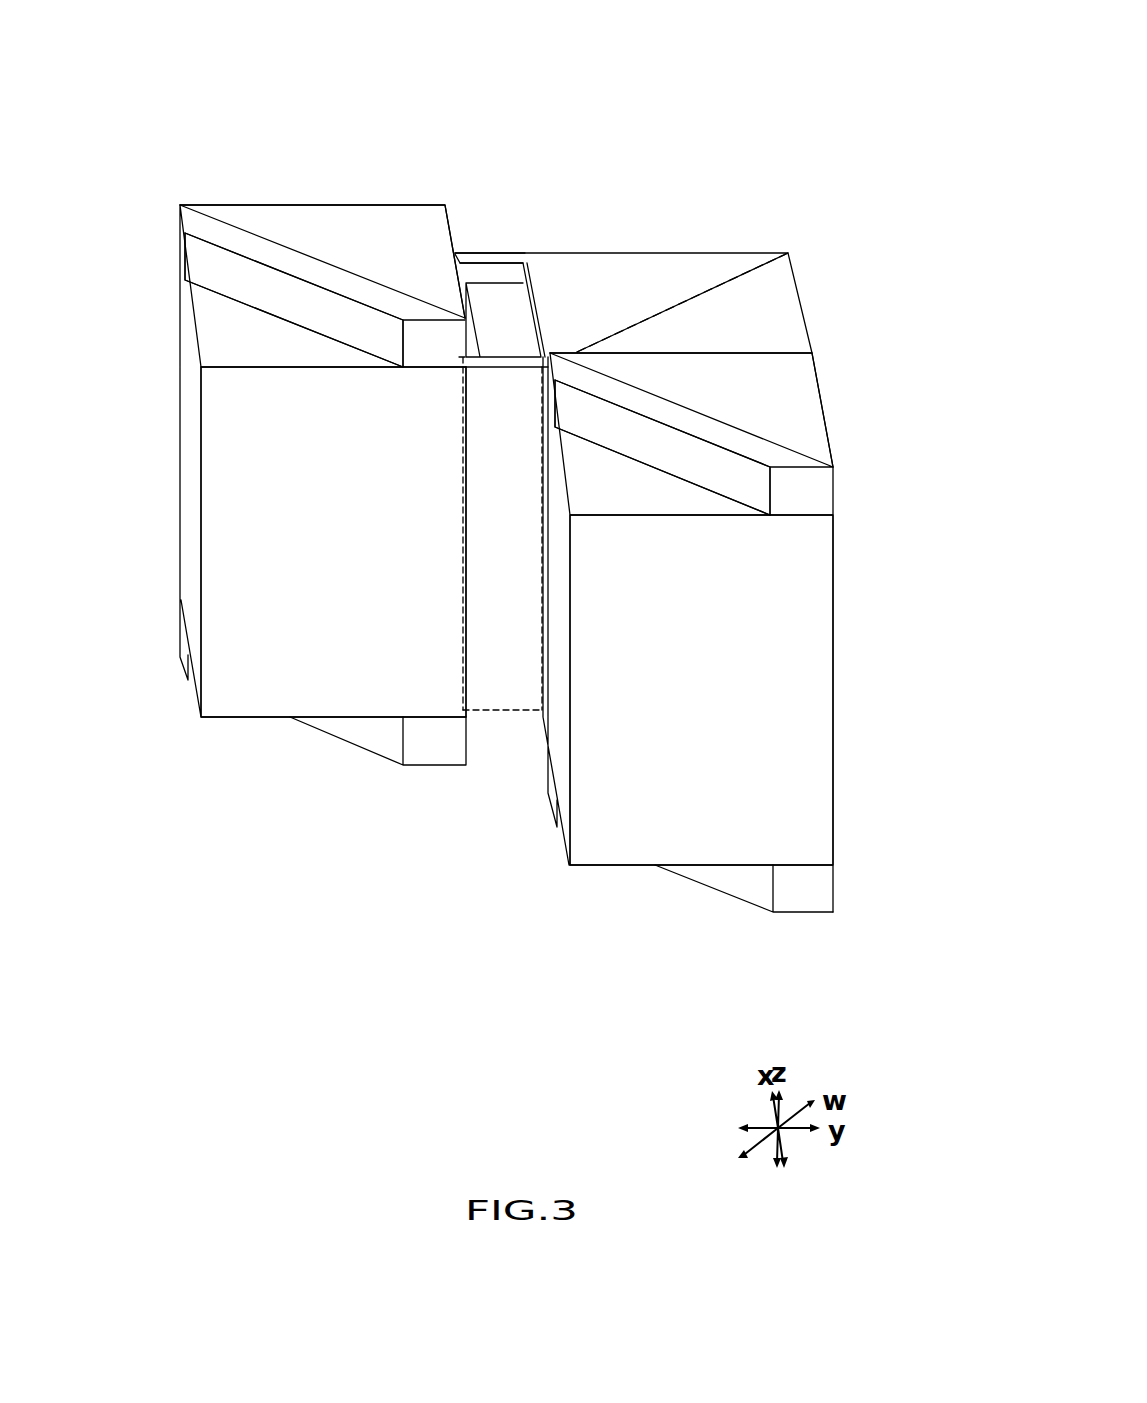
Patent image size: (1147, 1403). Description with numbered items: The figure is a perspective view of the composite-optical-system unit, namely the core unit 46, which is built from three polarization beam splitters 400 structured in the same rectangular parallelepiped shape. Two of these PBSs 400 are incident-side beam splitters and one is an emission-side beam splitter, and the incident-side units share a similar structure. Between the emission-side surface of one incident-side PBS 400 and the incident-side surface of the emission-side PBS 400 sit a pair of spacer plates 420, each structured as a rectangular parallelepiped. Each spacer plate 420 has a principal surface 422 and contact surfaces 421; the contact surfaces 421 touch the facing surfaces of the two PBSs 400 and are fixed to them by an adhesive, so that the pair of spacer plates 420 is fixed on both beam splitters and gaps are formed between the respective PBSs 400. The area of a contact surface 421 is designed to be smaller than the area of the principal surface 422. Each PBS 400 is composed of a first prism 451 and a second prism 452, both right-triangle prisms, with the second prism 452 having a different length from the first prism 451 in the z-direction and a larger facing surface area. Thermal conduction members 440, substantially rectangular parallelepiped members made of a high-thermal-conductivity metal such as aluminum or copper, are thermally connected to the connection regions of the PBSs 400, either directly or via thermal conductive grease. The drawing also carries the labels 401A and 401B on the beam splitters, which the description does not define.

The core unit 46 is at (519, 112).
The polarization beam splitter 400 is at (254, 192).
The rail of first vibrating body 401A is at (315, 250).
The rail of second vibrating body 401B is at (722, 415).
The spacer plate 420 is at (493, 258).
The contact surface 421 is at (457, 257).
The principal surface 422 is at (517, 677).
The thermal conduction member 440 is at (231, 232).
The first prism 451 is at (193, 490).
The second prism 452 is at (386, 225).